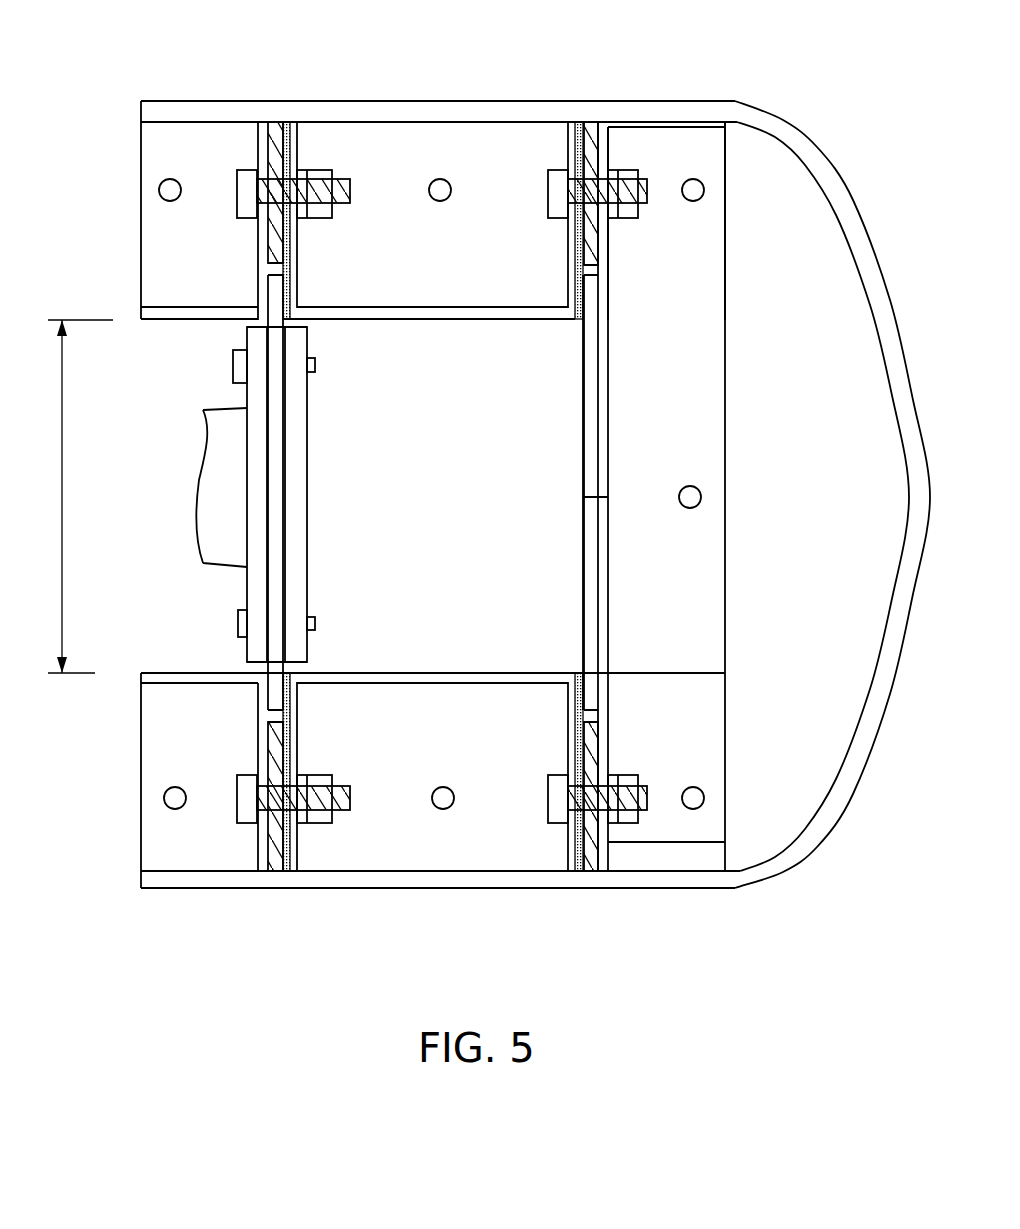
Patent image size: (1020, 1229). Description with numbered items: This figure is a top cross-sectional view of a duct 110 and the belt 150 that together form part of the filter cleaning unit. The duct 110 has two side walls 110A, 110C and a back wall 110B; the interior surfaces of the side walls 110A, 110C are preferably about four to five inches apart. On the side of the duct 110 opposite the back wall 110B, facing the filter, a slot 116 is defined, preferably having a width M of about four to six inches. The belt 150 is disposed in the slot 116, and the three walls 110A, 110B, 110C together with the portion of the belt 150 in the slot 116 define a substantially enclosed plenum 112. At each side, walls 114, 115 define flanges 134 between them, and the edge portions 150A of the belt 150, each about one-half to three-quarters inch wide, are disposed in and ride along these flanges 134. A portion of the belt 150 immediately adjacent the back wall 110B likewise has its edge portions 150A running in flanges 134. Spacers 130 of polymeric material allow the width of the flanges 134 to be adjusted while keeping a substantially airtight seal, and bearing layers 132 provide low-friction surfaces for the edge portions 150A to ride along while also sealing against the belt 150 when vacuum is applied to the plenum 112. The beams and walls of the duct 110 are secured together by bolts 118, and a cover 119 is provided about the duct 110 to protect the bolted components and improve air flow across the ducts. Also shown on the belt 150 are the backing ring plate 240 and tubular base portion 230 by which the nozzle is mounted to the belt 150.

The duct 110 is at (793, 537).
The side wall 110A is at (390, 683).
The back wall 110B is at (605, 332).
The side wall 110C is at (478, 307).
The plenum 112 is at (552, 495).
The wall 114 is at (262, 122).
The wall 115 is at (290, 122).
The slot 116 is at (215, 361).
The bolt 118 is at (250, 170).
The cover 119 is at (787, 133).
The spacer 130 is at (277, 122).
The bearing layer 132 is at (287, 150).
The flange 134 is at (240, 263).
The belt 150 is at (277, 433).
The edge portion 150A is at (593, 293).
The tubular base portion 230 is at (257, 583).
The backing ring plate 240 is at (297, 567).
The width of slot M is at (80, 496).